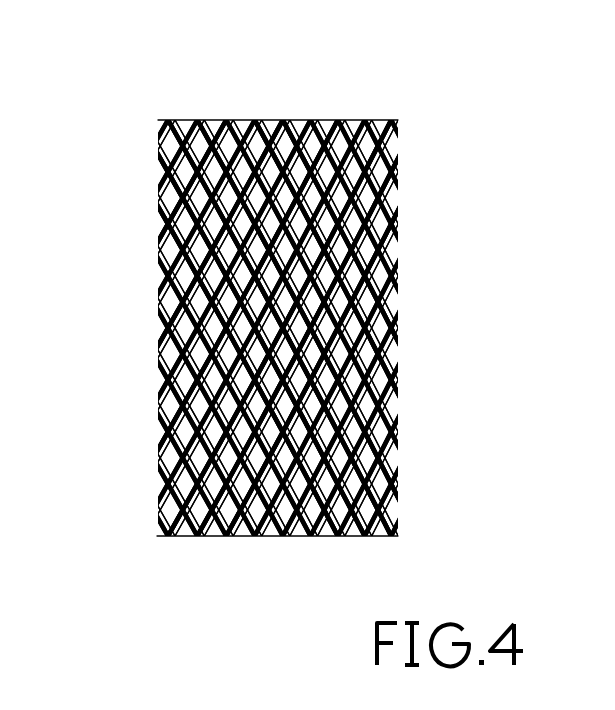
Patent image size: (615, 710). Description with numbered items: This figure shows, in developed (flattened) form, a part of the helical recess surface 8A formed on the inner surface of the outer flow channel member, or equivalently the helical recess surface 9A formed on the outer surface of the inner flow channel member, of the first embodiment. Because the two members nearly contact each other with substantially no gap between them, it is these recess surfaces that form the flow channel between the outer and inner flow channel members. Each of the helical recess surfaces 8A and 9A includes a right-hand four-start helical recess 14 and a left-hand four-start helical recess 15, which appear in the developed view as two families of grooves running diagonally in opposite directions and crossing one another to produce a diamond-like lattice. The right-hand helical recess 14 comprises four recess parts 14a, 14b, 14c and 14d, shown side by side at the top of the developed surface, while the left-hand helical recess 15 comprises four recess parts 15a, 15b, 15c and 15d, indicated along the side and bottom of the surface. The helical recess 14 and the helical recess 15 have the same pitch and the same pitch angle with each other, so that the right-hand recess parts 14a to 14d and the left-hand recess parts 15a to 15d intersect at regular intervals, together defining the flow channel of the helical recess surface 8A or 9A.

The helical recess surface 8A is at (391, 228).
The helical recess surface 9A is at (298, 328).
The right-hand four-start helical recess 14 is at (347, 43).
The recess part 14a is at (177, 120).
The recess part 14b is at (207, 120).
The recess part 14c is at (262, 120).
The recess part 14d is at (300, 120).
The left-hand four-start helical recess 15 is at (55, 200).
The recess part 15a is at (163, 192).
The recess part 15b is at (163, 298).
The recess part 15c is at (163, 380).
The recess part 15d is at (167, 503).